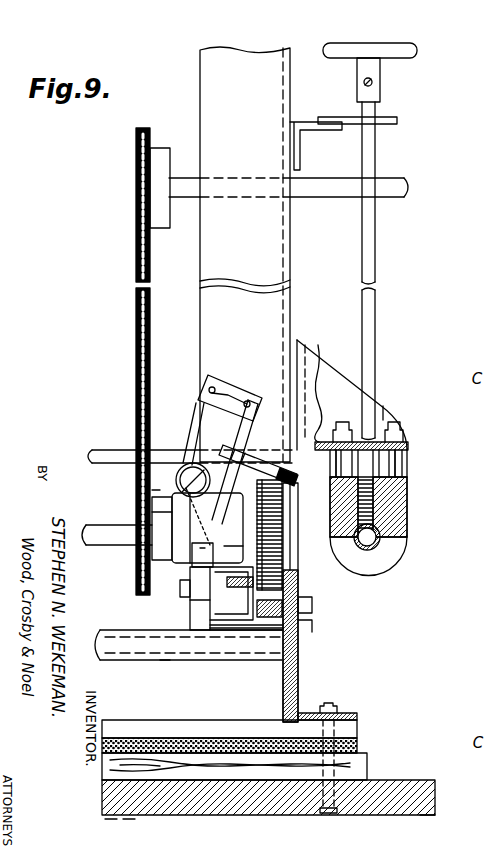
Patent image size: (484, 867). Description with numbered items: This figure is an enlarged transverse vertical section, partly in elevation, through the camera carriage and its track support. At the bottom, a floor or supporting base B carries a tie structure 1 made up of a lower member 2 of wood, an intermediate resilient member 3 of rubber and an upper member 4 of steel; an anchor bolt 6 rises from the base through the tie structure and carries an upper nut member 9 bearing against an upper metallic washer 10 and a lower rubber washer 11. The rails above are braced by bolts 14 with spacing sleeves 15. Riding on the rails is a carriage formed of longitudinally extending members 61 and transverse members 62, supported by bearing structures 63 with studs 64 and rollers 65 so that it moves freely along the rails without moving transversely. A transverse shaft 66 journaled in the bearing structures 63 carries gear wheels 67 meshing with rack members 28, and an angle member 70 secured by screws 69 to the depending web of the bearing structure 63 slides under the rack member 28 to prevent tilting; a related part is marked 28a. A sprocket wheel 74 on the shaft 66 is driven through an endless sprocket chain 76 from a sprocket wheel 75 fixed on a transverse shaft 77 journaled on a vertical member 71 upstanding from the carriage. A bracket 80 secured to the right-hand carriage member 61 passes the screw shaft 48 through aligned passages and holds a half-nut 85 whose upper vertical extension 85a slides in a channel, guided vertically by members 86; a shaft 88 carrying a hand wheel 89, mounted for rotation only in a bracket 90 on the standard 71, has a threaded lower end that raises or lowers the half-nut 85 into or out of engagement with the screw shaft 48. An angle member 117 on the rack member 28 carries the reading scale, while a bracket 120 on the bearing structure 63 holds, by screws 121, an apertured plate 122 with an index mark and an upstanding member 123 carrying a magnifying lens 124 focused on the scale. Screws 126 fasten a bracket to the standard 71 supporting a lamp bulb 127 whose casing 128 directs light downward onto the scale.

The vertical member 71 is at (245, 254).
The hand wheel 89 is at (383, 72).
The shaft 88 is at (402, 268).
The bracket 90 is at (365, 118).
The transverse shaft 77 is at (308, 186).
The endless sprocket chain 76 is at (126, 361).
The sprocket wheel 75 is at (169, 168).
The longitudinally extending member 61 is at (352, 381).
The bracket 80 is at (403, 399).
The screw shaft 48 is at (386, 513).
The half-nut 85 is at (427, 513).
The upper vertical extension 85a is at (432, 486).
The guide member 86 is at (373, 463).
The stud 64 is at (292, 532).
The roller 65 is at (319, 602).
The gear wheel 67 is at (328, 602).
The rack member 28 is at (327, 614).
The bolt 28a is at (331, 636).
The screw 126 is at (230, 388).
The upstanding member 123 is at (232, 462).
The magnifying lens 124 is at (258, 450).
The casing 128 is at (181, 459).
The lamp bulb 127 is at (187, 472).
The transverse member 62 is at (191, 442).
The bracket 120 is at (171, 528).
The sprocket wheel 74 is at (129, 479).
The bearing structure 63 is at (150, 524).
The transverse shaft 66 is at (117, 550).
The screw 121 is at (228, 529).
The plate 122 is at (182, 569).
The angle member 117 is at (182, 598).
The screw 69 is at (199, 598).
The angle member 70 is at (246, 656).
The bolt 14 is at (188, 657).
The spacing sleeve 15 is at (168, 671).
The tie structure 1 is at (157, 714).
The lower member 2 is at (268, 788).
The intermediate resilient member 3 is at (250, 762).
The upper member 4 is at (249, 738).
The lower rubber washer 11 is at (349, 715).
The upper metallic washer 10 is at (358, 748).
The upper nut member 9 is at (348, 691).
The anchor bolt 6 is at (438, 795).
The base B is at (422, 761).